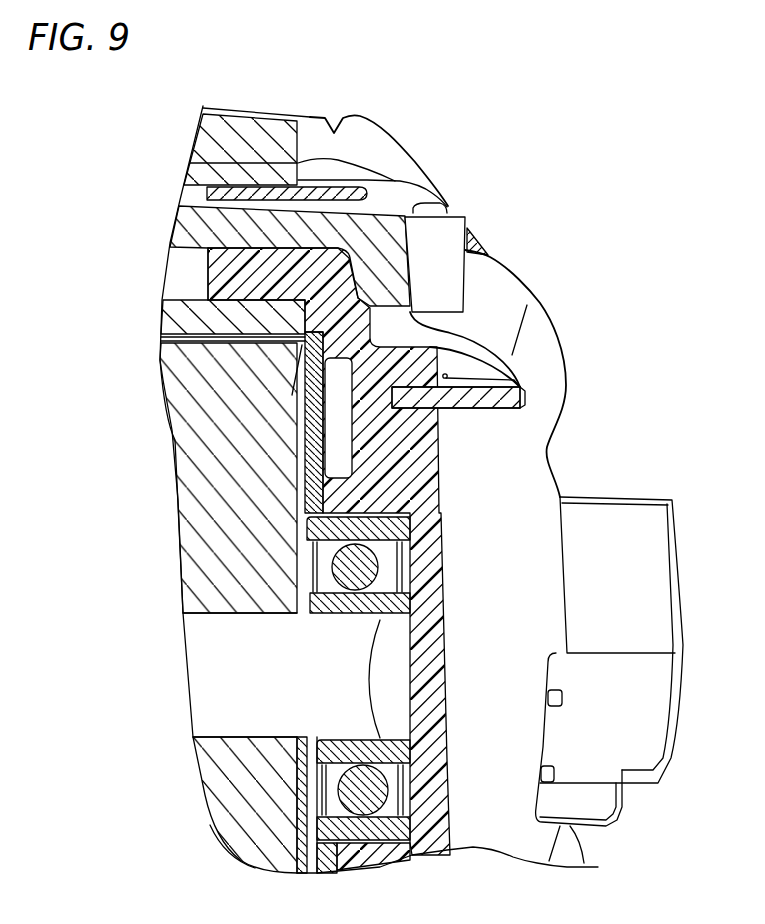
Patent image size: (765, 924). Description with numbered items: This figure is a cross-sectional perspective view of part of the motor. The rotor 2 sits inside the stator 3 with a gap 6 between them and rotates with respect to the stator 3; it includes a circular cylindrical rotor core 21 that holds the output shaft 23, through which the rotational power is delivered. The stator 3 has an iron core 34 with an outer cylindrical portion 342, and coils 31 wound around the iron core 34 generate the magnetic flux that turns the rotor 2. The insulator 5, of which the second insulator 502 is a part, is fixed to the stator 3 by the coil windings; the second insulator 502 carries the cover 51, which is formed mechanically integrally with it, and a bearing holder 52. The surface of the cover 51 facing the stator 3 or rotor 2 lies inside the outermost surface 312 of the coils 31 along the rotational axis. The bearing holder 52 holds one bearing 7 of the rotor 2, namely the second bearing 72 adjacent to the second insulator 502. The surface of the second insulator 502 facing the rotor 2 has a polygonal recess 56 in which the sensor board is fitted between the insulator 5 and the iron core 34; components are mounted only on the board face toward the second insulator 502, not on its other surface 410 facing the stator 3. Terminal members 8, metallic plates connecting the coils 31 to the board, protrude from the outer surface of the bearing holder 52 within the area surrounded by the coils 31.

The rotor 2 is at (183, 443).
The stator 3 is at (170, 317).
The insulator 5 is at (447, 868).
The second insulator 502 is at (493, 823).
The gap 6 is at (163, 338).
The bearing 7 is at (420, 561).
The second bearing 72 is at (390, 528).
The terminal member 8 is at (522, 397).
The rotor core 21 is at (265, 840).
The output shaft 23 is at (207, 665).
The coil 31 is at (448, 237).
The iron core 34 is at (182, 265).
The cover 51 is at (323, 413).
The bearing holder 52 is at (413, 570).
The recess 56 is at (372, 334).
The outermost surface of the coils 312 is at (466, 278).
The outer cylindrical portion 342 is at (363, 142).
The other surface of the sensor board 410 is at (303, 462).